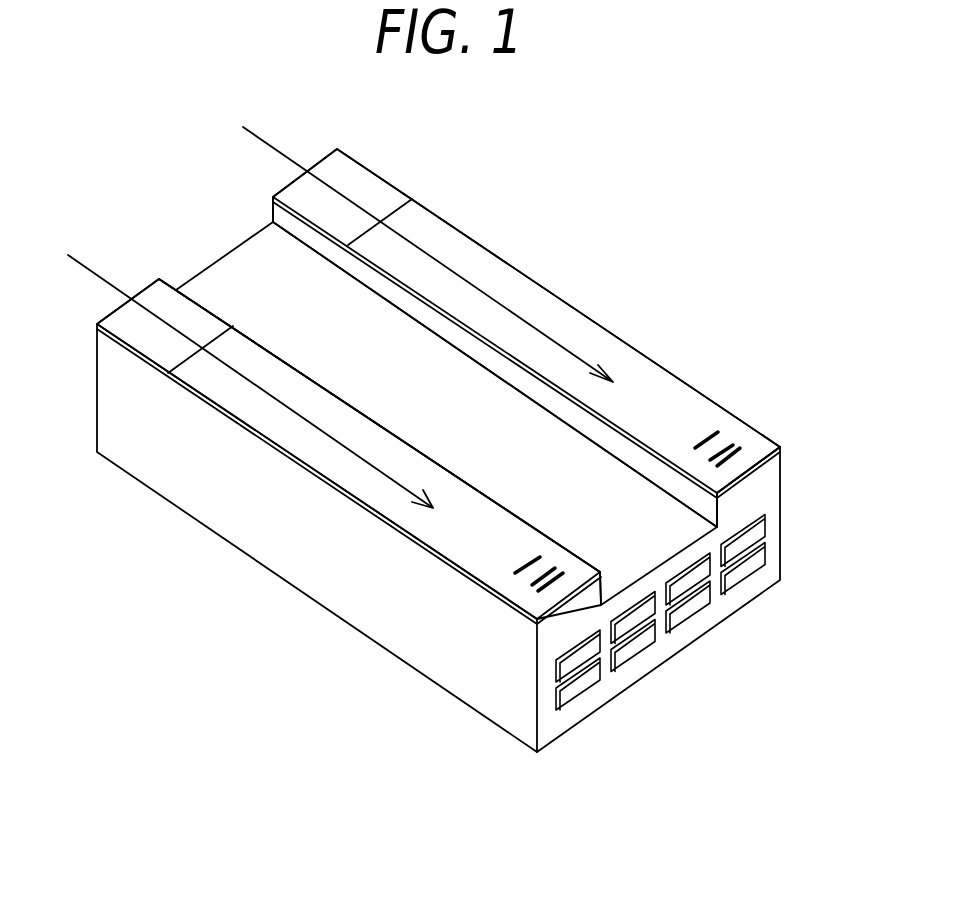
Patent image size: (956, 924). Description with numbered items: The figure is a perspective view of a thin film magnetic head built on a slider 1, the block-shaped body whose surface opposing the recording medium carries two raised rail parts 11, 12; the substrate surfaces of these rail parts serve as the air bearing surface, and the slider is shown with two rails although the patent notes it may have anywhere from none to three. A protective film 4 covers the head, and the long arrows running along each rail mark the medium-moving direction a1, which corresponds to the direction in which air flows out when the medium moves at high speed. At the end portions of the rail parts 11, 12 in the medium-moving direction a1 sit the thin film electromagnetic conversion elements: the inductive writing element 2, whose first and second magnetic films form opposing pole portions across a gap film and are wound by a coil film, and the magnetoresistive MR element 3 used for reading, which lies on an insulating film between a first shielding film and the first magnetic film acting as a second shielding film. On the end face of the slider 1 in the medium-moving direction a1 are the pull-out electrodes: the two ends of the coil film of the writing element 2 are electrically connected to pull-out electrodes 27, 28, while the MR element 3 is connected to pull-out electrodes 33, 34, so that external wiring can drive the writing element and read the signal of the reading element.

The slider 1 is at (157, 483).
The electromagnetic conversion element 2 is at (564, 554).
The MR element 3 is at (527, 539).
The protective film 4 is at (254, 350).
The rail part 11 is at (327, 390).
The rail part 12 is at (441, 212).
The pull-out electrode 27 is at (568, 670).
The pull-out electrode 28 is at (587, 692).
The pull-out electrode 33 is at (625, 634).
The pull-out electrode 34 is at (648, 645).
The medium-moving direction a1 is at (96, 270).